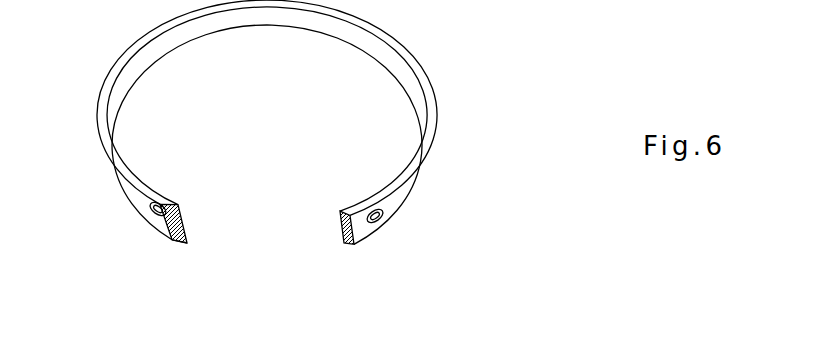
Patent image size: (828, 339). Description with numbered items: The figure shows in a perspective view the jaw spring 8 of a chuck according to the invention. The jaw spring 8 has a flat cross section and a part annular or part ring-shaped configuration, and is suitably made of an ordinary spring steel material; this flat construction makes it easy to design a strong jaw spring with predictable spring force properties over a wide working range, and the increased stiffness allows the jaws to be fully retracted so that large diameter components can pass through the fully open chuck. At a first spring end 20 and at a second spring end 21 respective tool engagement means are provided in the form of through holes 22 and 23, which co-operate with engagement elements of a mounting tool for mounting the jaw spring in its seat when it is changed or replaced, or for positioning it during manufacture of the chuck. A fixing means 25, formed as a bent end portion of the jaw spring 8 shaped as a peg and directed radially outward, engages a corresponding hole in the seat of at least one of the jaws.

The jaw spring 8 is at (432, 108).
The first spring end 20 is at (344, 250).
The second spring end 21 is at (190, 253).
The through hole 22 is at (382, 222).
The through hole 23 is at (153, 212).
The fixing means 25 is at (166, 250).